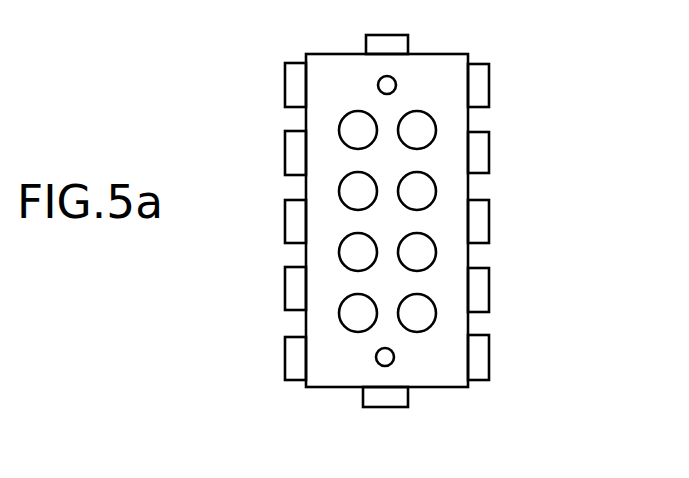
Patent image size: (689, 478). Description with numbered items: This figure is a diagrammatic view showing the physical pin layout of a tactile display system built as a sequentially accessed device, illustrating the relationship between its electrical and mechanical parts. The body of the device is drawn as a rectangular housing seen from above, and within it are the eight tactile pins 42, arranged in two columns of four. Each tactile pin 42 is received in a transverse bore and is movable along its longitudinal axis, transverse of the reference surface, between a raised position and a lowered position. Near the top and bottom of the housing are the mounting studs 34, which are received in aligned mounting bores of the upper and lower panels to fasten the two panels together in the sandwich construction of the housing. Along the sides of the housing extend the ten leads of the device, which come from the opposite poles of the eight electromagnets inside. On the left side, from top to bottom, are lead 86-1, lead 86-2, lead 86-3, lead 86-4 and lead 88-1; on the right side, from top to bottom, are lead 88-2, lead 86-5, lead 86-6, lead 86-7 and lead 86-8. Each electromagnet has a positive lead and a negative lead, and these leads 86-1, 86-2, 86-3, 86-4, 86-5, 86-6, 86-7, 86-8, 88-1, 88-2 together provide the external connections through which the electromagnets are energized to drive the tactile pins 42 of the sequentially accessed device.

The tactile pin 42 is at (425, 111).
The mounting stud 34 is at (391, 360).
The lead 86-1 is at (291, 85).
The lead 86-2 is at (291, 153).
The lead 86-3 is at (291, 220).
The lead 86-4 is at (291, 292).
The lead 86-5 is at (485, 150).
The lead 86-6 is at (483, 219).
The lead 86-7 is at (480, 287).
The lead 86-8 is at (480, 357).
The lead 88-1 is at (292, 359).
The lead 88-2 is at (485, 84).